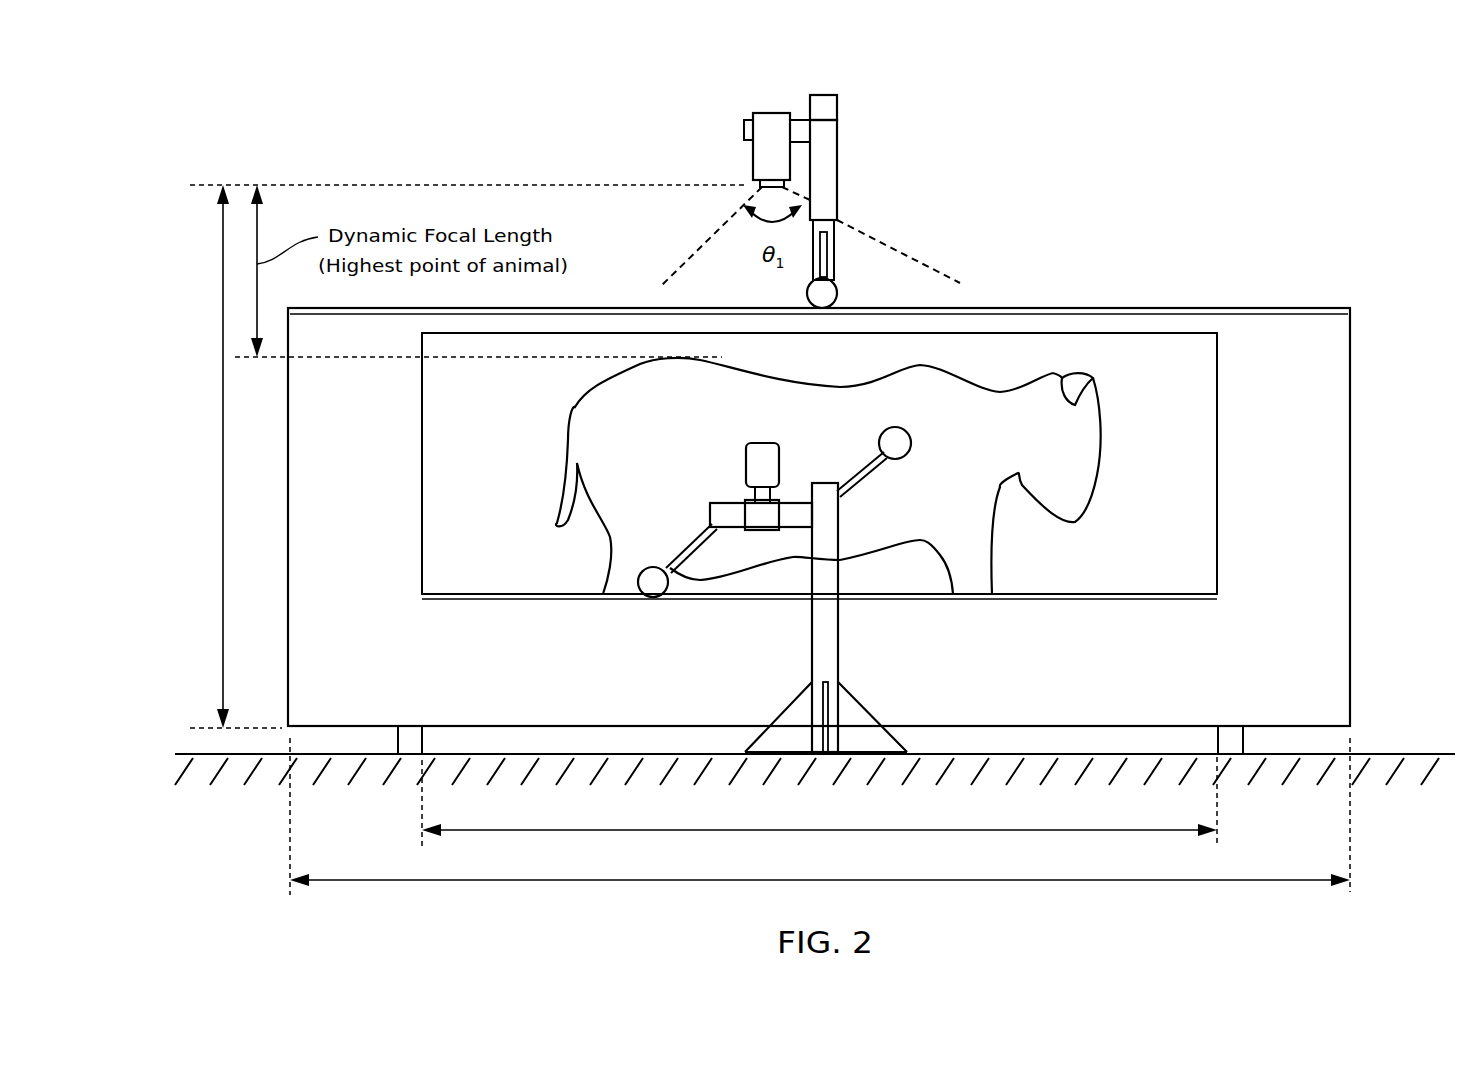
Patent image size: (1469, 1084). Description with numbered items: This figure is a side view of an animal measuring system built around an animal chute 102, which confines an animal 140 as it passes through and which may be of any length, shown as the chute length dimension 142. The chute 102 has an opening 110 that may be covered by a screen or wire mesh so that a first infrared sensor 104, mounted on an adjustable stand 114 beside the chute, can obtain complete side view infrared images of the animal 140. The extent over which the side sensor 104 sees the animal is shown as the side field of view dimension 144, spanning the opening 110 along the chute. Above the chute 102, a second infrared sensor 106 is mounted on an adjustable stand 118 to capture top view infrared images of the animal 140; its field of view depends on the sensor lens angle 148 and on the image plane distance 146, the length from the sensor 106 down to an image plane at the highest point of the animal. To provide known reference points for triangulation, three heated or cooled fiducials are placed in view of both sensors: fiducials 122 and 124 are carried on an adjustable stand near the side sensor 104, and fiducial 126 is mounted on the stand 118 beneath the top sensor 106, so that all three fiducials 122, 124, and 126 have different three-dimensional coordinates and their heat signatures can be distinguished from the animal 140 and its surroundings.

The animal chute 102 is at (1273, 322).
The first infrared sensor 104 is at (755, 462).
The second infrared sensor 106 is at (762, 160).
The opening 110 is at (997, 378).
The adjustable stand 114 is at (828, 651).
The adjustable stand 118 is at (828, 170).
The fiducial 122 is at (655, 584).
The fiducial 124 is at (900, 442).
The fiducial 126 is at (830, 295).
The animal 140 is at (1085, 457).
The dimension L1 142 is at (665, 868).
The dimension FOVs 144 is at (942, 820).
The length Y1 146 is at (190, 458).
The angle θ1 148 is at (717, 235).